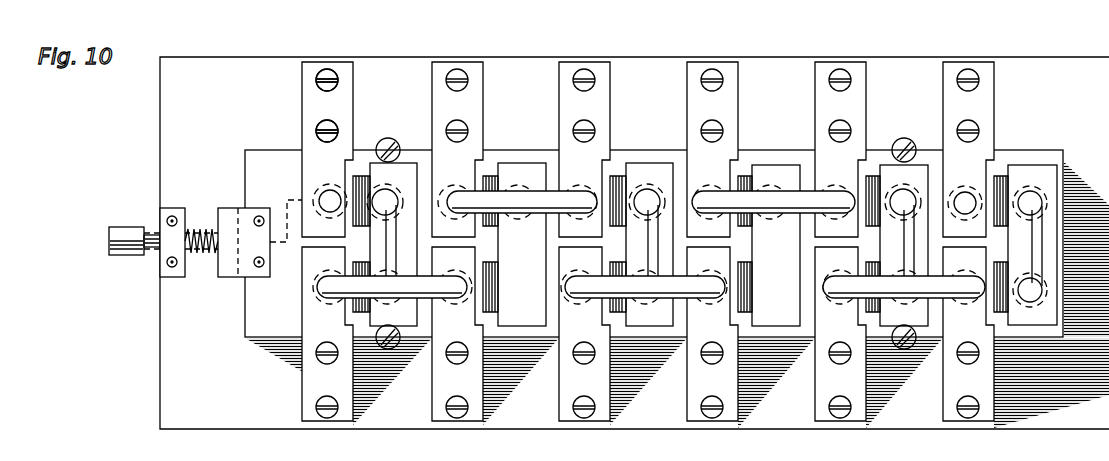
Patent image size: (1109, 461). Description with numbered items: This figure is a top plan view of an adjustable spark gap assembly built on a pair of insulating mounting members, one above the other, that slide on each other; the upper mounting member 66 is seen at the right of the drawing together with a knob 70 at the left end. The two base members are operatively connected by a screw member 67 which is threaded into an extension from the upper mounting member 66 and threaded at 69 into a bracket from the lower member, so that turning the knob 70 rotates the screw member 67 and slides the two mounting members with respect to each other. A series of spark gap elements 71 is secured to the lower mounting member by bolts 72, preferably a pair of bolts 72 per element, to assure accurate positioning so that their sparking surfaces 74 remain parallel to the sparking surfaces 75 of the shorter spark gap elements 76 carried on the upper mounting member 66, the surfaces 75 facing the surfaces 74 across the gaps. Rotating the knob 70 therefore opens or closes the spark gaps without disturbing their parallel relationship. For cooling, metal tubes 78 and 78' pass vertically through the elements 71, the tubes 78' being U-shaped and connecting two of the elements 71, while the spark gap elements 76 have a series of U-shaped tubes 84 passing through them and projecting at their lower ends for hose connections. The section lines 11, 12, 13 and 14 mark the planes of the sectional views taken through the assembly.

The section line 11- 11 is at (93, 243).
The section line 12- 12 is at (967, 58).
The section line 13- 13 is at (905, 50).
The section line 14- 14 is at (745, 50).
The upper mounting member 66 is at (1036, 160).
The screw member 67 is at (154, 224).
The threaded portion 69 is at (153, 256).
The knob 70 is at (112, 228).
The spark gap elements 71 is at (346, 93).
The bolts 72 is at (318, 127).
The sparking surfaces 74 is at (357, 186).
The sparking surfaces 75 is at (364, 180).
The spark gap elements 76 is at (410, 163).
The metal tubes 78 is at (622, 197).
The U-shaped metal tubes 78' is at (649, 309).
The U-shaped tubes 84 is at (505, 241).